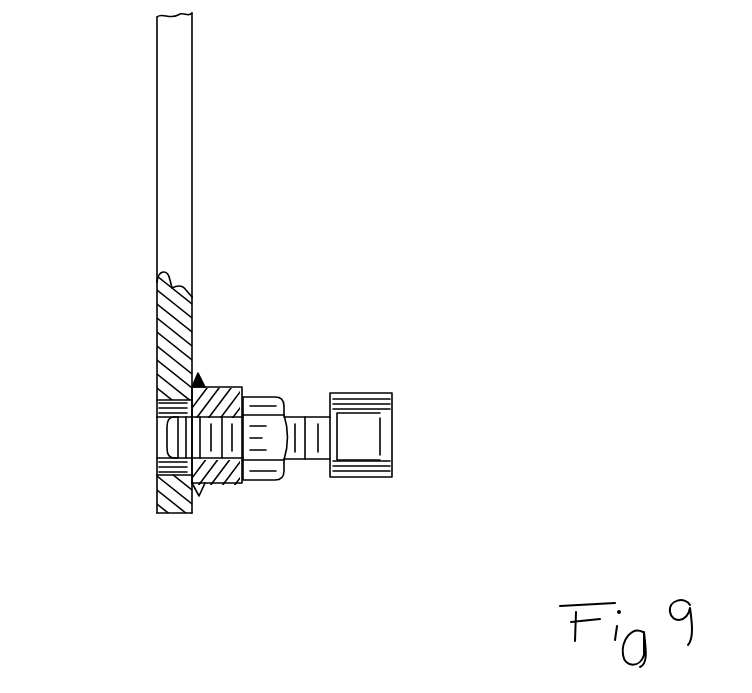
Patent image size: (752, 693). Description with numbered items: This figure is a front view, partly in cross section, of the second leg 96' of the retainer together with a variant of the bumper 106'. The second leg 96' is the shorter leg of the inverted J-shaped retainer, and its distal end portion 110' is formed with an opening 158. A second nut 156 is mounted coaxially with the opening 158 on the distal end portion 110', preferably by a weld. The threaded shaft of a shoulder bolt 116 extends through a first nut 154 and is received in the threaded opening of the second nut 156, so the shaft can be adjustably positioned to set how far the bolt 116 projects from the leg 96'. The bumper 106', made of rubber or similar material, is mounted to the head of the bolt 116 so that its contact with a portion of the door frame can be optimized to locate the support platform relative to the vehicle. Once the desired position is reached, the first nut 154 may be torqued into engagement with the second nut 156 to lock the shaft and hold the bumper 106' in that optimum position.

The second leg 96' is at (111, 155).
The distal end portion 110' is at (106, 397).
The opening 158 is at (150, 462).
The second nut 156 is at (231, 387).
The first nut 154 is at (273, 392).
The shoulder bolt 116 is at (300, 465).
The bumper 106' is at (427, 464).